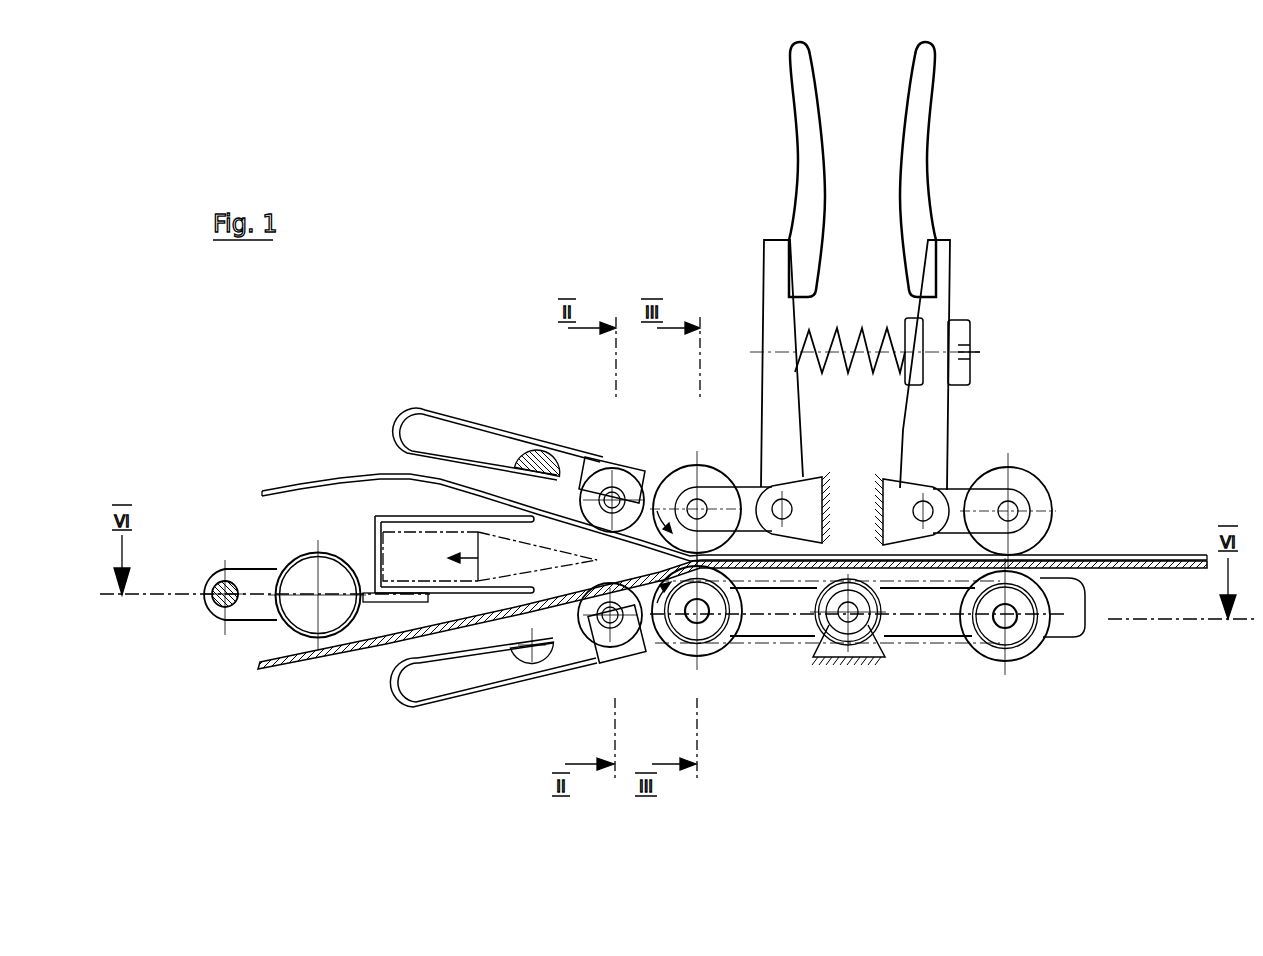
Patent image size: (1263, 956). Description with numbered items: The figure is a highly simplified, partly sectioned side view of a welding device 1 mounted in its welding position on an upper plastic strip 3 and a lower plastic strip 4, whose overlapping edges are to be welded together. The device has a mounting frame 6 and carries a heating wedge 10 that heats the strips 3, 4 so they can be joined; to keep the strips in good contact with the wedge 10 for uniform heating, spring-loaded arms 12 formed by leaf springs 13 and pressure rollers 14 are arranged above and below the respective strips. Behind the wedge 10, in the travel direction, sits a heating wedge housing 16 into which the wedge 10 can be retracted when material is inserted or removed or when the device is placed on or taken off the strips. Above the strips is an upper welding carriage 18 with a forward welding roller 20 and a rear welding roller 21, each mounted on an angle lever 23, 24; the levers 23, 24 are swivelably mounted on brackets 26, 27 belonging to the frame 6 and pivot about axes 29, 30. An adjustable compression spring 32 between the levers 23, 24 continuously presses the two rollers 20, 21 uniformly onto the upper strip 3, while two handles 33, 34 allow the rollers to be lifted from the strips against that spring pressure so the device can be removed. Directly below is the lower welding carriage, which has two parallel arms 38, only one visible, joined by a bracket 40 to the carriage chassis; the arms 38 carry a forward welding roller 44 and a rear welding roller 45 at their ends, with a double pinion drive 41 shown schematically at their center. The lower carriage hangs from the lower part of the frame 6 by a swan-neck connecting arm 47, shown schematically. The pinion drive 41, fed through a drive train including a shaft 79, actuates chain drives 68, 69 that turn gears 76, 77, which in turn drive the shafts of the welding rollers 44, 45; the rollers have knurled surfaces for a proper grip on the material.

The welding device 1 is at (584, 238).
The upper plastic strip 3 is at (308, 482).
The lower plastic strip 4 is at (264, 676).
The mounting frame 6 is at (533, 458).
The heating wedge 10 is at (513, 558).
The spring-loaded arms 12 is at (468, 398).
The leaf springs 13 is at (404, 424).
The pressure rollers 14 is at (592, 482).
The heating wedge housing 16 is at (377, 518).
The upper welding carriage 18 is at (976, 444).
The forward welding roller 20 is at (692, 478).
The rear welding roller 21 is at (1034, 497).
The angle lever 23 is at (777, 267).
The angle lever 24 is at (942, 268).
The bracket 26 is at (808, 497).
The bracket 27 is at (893, 498).
The axis 29 is at (786, 495).
The axis 30 is at (923, 505).
The adjustable compression spring 32 is at (833, 337).
The handle 33 is at (808, 212).
The handle 34 is at (915, 217).
The parallel arms 38 is at (958, 647).
The bracket 40 is at (869, 651).
The double pinion drive 41 is at (920, 625).
The forward welding roller 44 is at (685, 652).
The rear welding roller 45 is at (1043, 643).
The connecting arm 47 is at (307, 638).
The chain drive 68 is at (758, 643).
The chain drive 69 is at (1018, 645).
The gear 76 is at (703, 644).
The gear 77 is at (1038, 639).
The shaft 79 is at (223, 607).